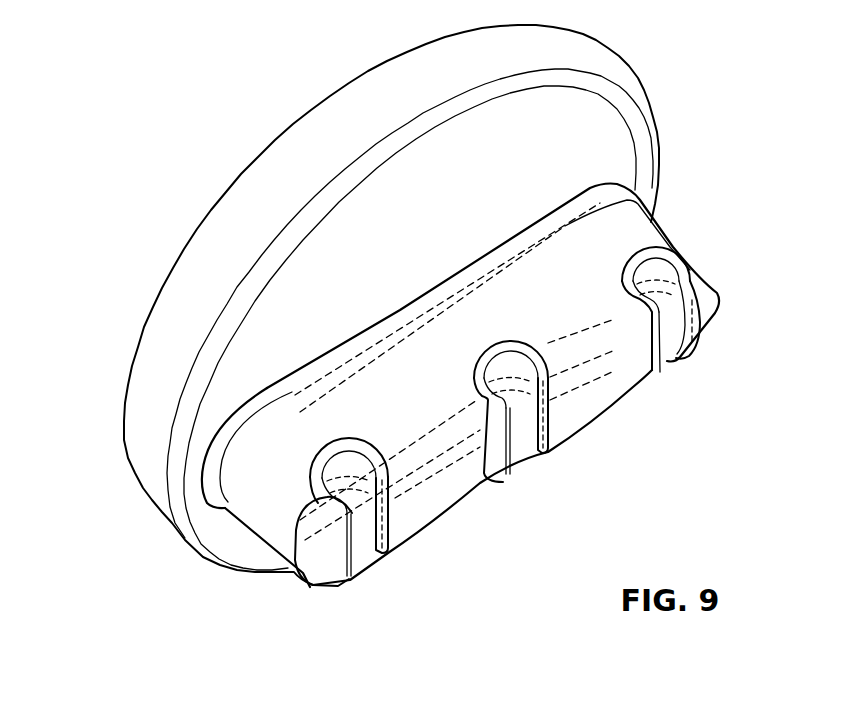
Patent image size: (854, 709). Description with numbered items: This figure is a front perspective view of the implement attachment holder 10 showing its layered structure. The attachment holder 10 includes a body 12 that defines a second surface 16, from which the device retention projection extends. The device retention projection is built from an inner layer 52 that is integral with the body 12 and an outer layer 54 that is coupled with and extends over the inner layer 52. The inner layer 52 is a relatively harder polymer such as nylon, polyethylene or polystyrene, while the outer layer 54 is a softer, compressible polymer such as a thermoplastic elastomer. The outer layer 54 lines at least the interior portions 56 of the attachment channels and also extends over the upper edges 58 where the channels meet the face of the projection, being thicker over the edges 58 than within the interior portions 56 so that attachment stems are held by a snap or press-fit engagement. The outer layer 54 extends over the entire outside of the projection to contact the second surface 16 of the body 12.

The implement attachment holder 10 is at (604, 51).
The body 12 is at (176, 449).
The second surface 16 is at (558, 134).
The inner layer 52 is at (272, 500).
The outer layer 54 is at (678, 242).
The interior portions 56 is at (358, 500).
The upper edges 58 is at (386, 552).